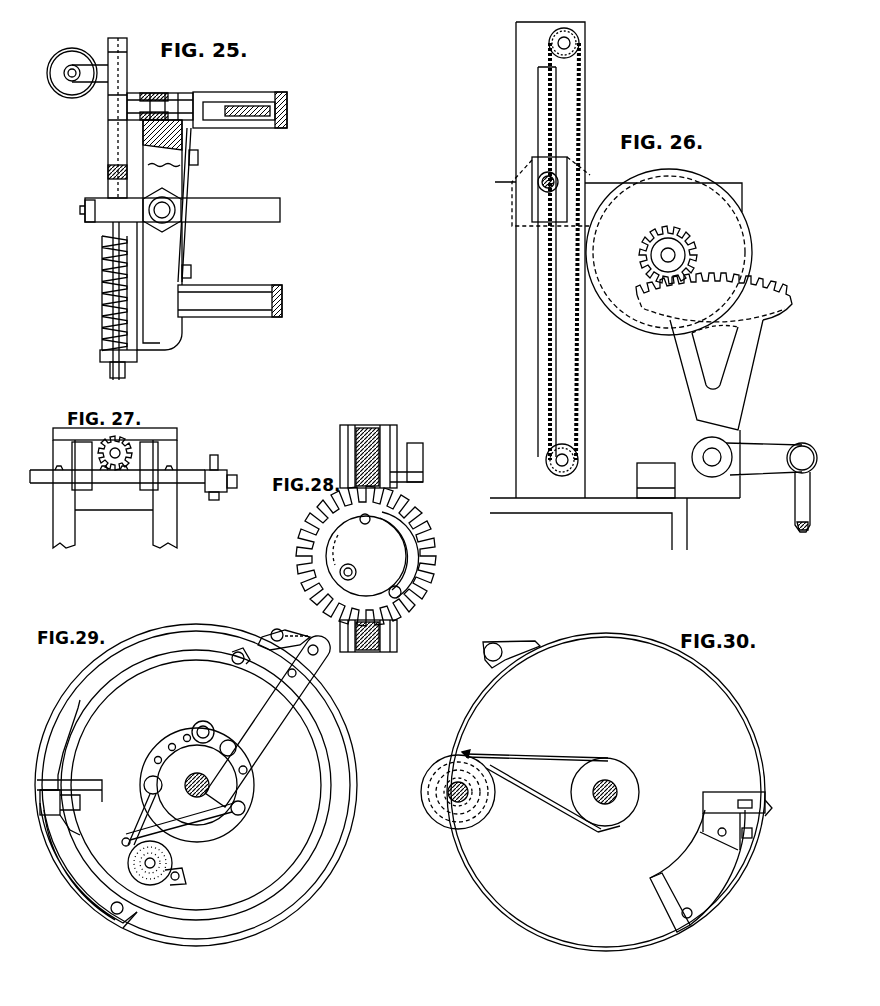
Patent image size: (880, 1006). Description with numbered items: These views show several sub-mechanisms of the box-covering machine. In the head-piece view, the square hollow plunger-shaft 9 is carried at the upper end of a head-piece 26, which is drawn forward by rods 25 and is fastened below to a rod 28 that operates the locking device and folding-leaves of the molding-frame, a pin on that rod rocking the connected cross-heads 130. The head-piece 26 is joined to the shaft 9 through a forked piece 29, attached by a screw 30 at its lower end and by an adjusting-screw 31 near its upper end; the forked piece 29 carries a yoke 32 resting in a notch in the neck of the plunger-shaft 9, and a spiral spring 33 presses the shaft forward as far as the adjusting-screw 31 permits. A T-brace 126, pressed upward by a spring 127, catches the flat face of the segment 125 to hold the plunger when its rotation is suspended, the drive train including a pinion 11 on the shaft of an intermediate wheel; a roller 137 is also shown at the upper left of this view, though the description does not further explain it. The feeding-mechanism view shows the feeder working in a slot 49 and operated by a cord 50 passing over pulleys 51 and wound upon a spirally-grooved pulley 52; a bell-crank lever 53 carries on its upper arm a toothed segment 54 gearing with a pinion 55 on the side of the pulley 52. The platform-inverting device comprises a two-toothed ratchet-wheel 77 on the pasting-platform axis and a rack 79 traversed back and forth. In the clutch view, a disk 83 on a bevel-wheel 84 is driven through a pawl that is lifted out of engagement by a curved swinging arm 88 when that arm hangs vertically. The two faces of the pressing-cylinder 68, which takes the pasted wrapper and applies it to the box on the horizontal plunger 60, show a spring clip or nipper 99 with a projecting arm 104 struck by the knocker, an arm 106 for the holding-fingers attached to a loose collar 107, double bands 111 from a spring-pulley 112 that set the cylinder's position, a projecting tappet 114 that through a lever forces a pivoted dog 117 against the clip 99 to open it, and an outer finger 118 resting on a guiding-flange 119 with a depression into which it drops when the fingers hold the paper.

In FIG. 25, the plunger-shaft 9 is at (240, 107).
In FIG. 25, the pinion 11 is at (247, 110).
In FIG. 25, the rods 25 is at (180, 210).
In FIG. 25, the head-piece 26 is at (159, 235).
In FIG. 25, the rod 28 is at (230, 301).
In FIG. 25, the forked piece 29 is at (193, 133).
In FIG. 25, the screw 30 is at (194, 270).
In FIG. 25, the adjusting-screw 31 is at (202, 158).
In FIG. 25, the yoke 32 is at (138, 92).
In FIG. 25, the spiral spring 33 is at (183, 92).
In FIG. 26, the slot 49 is at (538, 338).
In FIG. 26, the cord 50 is at (580, 112).
In FIG. 26, the pulleys 51 is at (578, 38).
In FIG. 26, the spirally-grooved pulley 52 is at (669, 252).
In FIG. 26, the bell-crank lever 53 is at (754, 464).
In FIG. 26, the toothed segment 54 is at (714, 351).
In FIG. 26, the pinion 55 is at (697, 246).
In FIG. 29, the horizontal plunger 60 is at (88, 865).
In FIG. 29, the pressing-cylinder 68 is at (196, 785).
In FIG. 30, the pressing-cylinder 68 is at (606, 792).
In FIG. 27, the ratchet-wheel 77 is at (115, 450).
In FIG. 27, the rack 79 is at (133, 488).
In FIG. 28, the disk 83 is at (366, 556).
In FIG. 28, the bevel-wheel 84 is at (366, 556).
In FIG. 28, the curved swinging arm 88 is at (381, 538).
In FIG. 30, the spring clip or nipper 99 is at (697, 871).
In FIG. 29, the arm 104 is at (159, 863).
In FIG. 30, the arm 104 is at (739, 831).
In FIG. 29, the arm 106 is at (235, 739).
In FIG. 29, the loose collar 107 is at (145, 805).
In FIG. 29, the double bands 111 is at (66, 831).
In FIG. 30, the double bands 111 is at (611, 792).
In FIG. 29, the spring-pulley 112 is at (52, 802).
In FIG. 30, the spring-pulley 112 is at (520, 791).
In FIG. 29, the projecting tappet 114 is at (183, 823).
In FIG. 30, the projecting tappet 114 is at (744, 804).
In FIG. 30, the pivoted dog 117 is at (697, 844).
In FIG. 29, the outer finger 118 is at (284, 633).
In FIG. 30, the outer finger 118 is at (511, 647).
In FIG. 29, the guiding-flange 119 is at (229, 659).
In FIG. 25, the segment 125 is at (115, 118).
In FIG. 25, the T-brace 126 is at (115, 161).
In FIG. 25, the spring 127 is at (100, 280).
In FIG. 29, the cross-head 130 is at (122, 716).
In FIG. 25, the roller 137 is at (77, 73).